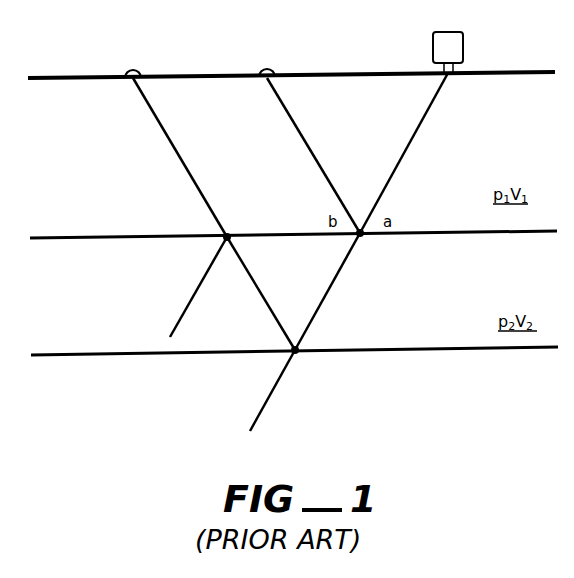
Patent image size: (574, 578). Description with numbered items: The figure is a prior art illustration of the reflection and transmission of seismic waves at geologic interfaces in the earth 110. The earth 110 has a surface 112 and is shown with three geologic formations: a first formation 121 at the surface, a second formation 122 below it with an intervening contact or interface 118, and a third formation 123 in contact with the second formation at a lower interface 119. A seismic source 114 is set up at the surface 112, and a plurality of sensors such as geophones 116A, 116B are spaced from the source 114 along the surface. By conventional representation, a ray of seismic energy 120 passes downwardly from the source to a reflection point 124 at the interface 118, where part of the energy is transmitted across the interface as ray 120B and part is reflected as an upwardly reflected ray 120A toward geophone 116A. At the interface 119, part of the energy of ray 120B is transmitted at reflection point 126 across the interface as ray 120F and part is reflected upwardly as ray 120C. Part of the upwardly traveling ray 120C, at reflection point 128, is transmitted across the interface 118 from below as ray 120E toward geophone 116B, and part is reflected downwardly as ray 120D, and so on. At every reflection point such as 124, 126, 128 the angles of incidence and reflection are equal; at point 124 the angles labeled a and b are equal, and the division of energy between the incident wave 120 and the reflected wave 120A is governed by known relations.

The earth 110 is at (373, 118).
The surface 112 is at (358, 72).
The seismic source 114 is at (463, 40).
The geophone 116A is at (266, 62).
The geophone 116B is at (132, 63).
The interface 118 is at (501, 234).
The interface 119 is at (507, 350).
The ray of seismic energy 120 is at (418, 133).
The upwardly reflected ray 120A is at (292, 122).
The transmitted ray 120B is at (322, 303).
The upwardly reflected ray 120C is at (245, 267).
The downwardly reflected ray 120D is at (190, 303).
The transmitted ray 120E is at (190, 180).
The transmitted ray 120F is at (270, 405).
The geologic formation 121 is at (68, 173).
The geologic formation 122 is at (72, 304).
The third formation 123 is at (76, 412).
The reflection point 124 is at (362, 237).
The reflection point 126 is at (300, 352).
The reflection point 128 is at (229, 232).